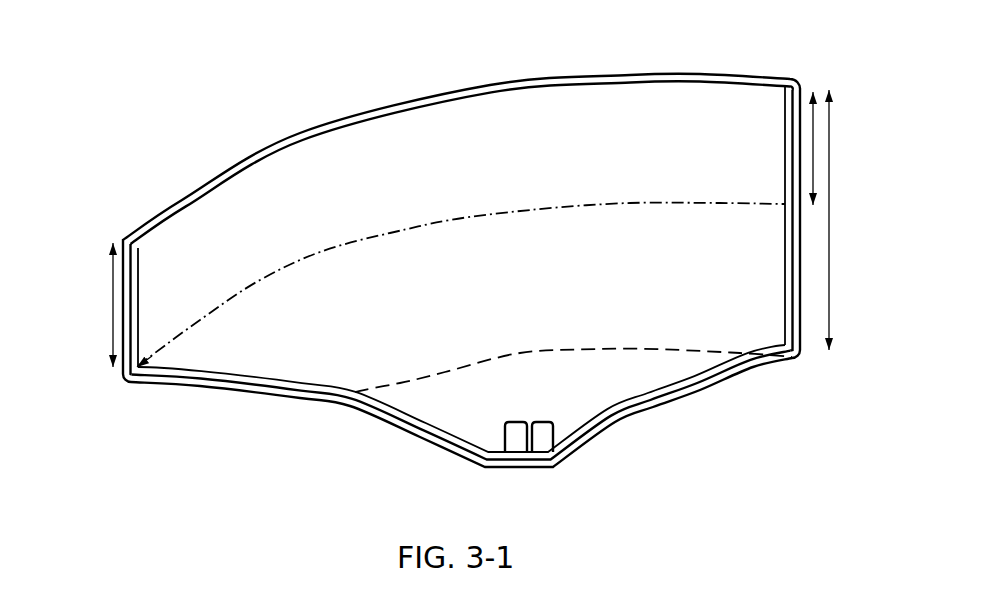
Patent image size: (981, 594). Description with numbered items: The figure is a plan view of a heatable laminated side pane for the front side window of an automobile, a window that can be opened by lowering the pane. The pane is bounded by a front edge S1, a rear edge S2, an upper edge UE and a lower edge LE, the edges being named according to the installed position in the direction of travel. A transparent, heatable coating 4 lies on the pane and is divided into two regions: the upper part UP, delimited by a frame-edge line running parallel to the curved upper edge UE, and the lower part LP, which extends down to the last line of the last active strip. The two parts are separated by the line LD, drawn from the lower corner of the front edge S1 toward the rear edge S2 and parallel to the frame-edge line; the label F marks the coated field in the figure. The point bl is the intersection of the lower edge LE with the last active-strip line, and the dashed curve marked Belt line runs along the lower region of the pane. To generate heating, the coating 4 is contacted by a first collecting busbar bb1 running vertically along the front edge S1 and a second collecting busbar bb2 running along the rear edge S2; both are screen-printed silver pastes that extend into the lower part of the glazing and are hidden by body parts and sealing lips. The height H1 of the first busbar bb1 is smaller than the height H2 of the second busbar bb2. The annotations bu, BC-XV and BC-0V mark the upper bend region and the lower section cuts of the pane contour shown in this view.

The heatable coating 4 is at (672, 115).
The upper edge UE is at (587, 78).
The upper part UP is at (462, 138).
The panel surface F is at (447, 286).
The line delimiting the upper and lower parts LD is at (197, 327).
The lower part LP is at (460, 393).
The intersection of LE and L2(n) bl is at (460, 407).
The lower edge LE is at (640, 413).
The belt line Belt line is at (638, 418).
The cross section XV BC-XV is at (502, 463).
The cross section 0V BC-0V is at (540, 442).
The upper bend bu is at (131, 237).
The first collecting busbar bb1 is at (126, 378).
The second collecting busbar bb2 is at (792, 92).
The front edge S1 is at (92, 327).
The rear edge S2 is at (847, 260).
The height of the first collecting busbar H1 is at (109, 304).
The height of the second collecting busbar H2 is at (832, 148).